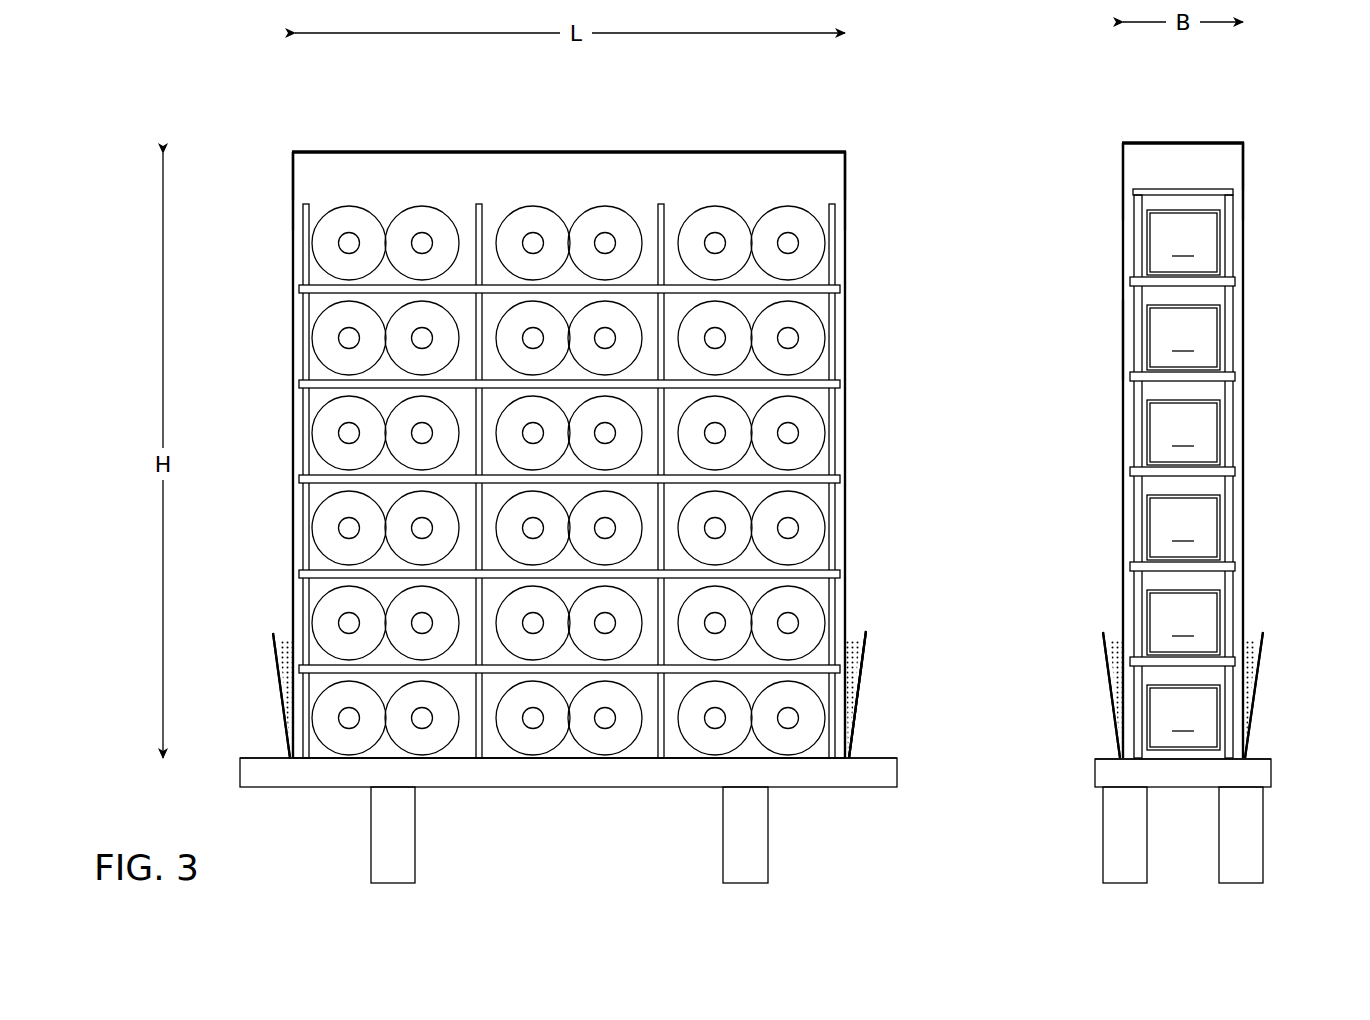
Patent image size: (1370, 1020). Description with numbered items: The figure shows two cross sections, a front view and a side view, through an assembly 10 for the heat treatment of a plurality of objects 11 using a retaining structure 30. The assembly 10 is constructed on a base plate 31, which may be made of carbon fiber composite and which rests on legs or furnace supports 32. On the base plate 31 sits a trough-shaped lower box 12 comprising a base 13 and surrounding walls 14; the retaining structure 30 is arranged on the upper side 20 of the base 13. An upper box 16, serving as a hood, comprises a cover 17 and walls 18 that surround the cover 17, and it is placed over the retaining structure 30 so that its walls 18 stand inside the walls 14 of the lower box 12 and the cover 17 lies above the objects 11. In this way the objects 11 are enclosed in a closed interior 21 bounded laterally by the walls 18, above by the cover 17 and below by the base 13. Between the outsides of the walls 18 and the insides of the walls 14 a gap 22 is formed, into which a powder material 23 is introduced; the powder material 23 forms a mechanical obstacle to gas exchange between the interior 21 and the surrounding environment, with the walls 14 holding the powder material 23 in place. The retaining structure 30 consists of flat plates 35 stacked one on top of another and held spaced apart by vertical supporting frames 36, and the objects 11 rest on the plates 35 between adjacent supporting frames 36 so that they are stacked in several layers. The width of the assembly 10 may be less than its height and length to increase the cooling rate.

The assembly 10 is at (310, 140).
The object 11 is at (360, 212).
The lower box 12 is at (878, 640).
The base 13 is at (818, 760).
The walls 14 is at (280, 660).
The upper box 16 is at (821, 145).
The cover 17 is at (697, 152).
The walls 18 is at (300, 322).
The upper side 20 is at (497, 742).
The interior 21 is at (816, 180).
The gap 22 is at (283, 630).
The powder material 23 is at (862, 628).
The retaining structure 30 is at (325, 195).
The base plate 31 is at (892, 773).
The legs or furnace supports 32 is at (383, 861).
The flat plates 35 is at (841, 385).
The vertical supporting frames 36 is at (480, 205).